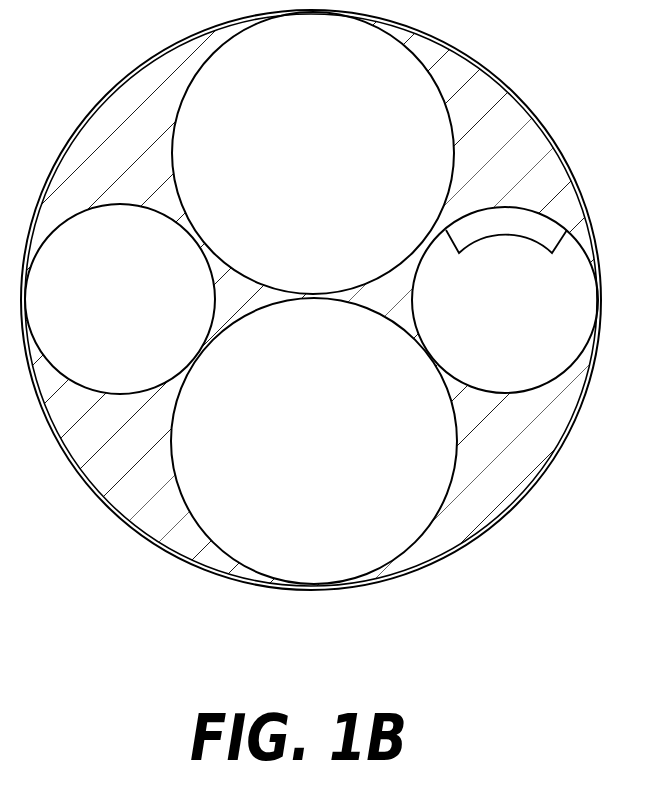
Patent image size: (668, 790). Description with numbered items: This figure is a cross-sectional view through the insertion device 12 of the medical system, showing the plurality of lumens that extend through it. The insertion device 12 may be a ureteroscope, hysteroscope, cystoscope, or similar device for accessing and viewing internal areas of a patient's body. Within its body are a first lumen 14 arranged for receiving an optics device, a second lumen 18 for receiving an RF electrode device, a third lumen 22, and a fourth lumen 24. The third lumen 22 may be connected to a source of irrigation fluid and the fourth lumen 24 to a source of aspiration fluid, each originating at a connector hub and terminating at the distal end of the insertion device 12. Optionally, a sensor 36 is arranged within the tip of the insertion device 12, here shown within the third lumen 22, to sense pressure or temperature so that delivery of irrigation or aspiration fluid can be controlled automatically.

The insertion device 12 is at (529, 103).
The first lumen 14 is at (326, 168).
The second lumen 18 is at (326, 457).
The third lumen 22 is at (518, 311).
The fourth lumen 24 is at (133, 311).
The sensor 36 is at (534, 225).